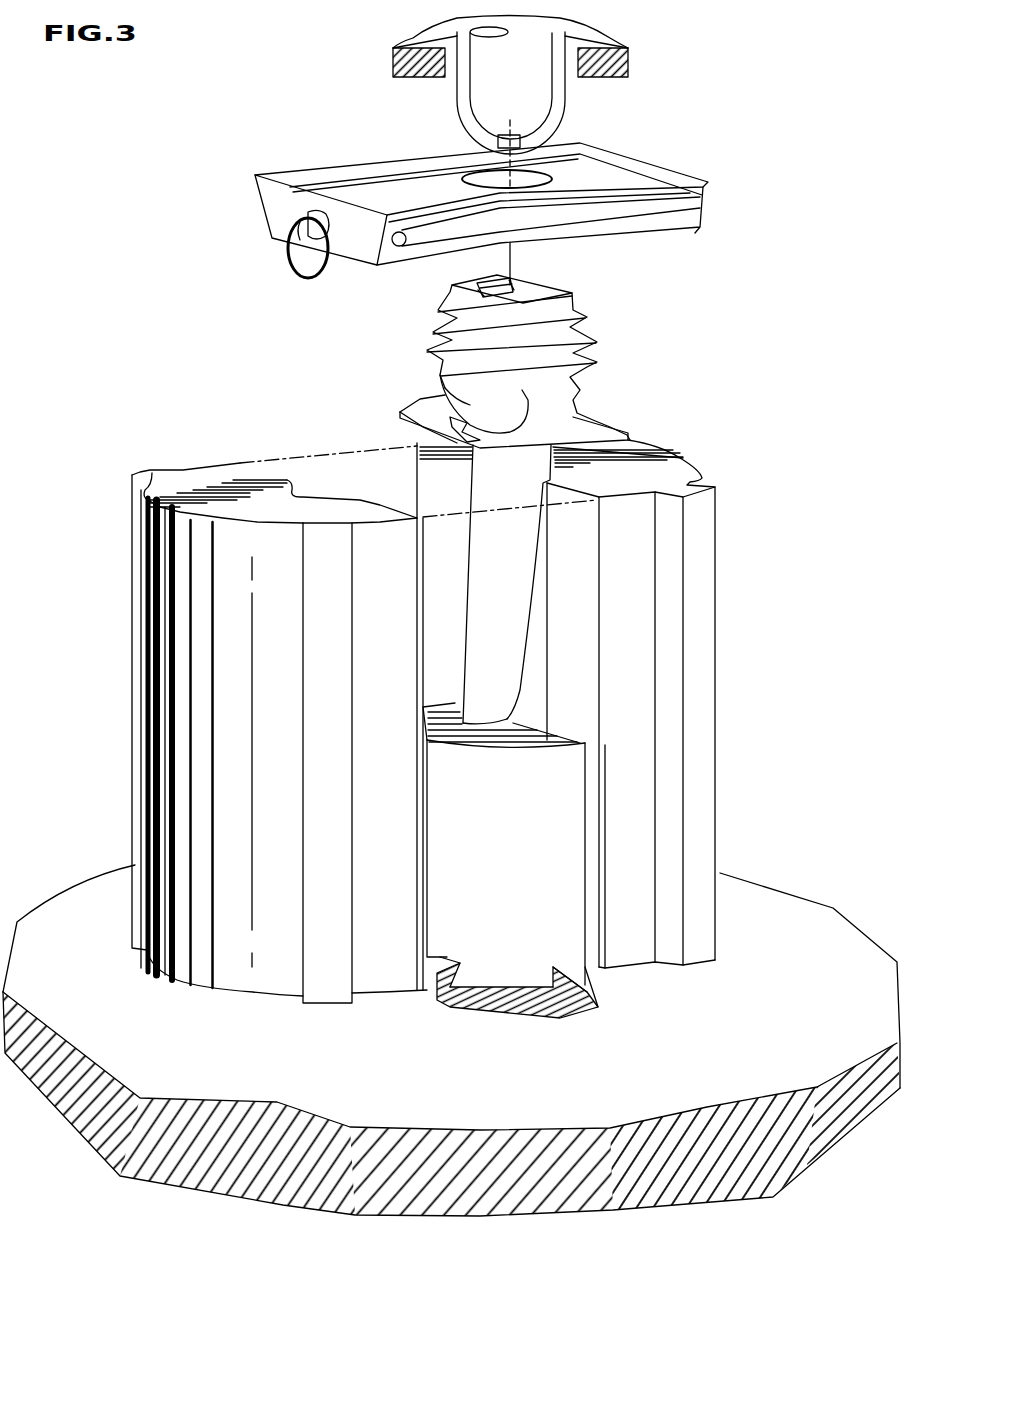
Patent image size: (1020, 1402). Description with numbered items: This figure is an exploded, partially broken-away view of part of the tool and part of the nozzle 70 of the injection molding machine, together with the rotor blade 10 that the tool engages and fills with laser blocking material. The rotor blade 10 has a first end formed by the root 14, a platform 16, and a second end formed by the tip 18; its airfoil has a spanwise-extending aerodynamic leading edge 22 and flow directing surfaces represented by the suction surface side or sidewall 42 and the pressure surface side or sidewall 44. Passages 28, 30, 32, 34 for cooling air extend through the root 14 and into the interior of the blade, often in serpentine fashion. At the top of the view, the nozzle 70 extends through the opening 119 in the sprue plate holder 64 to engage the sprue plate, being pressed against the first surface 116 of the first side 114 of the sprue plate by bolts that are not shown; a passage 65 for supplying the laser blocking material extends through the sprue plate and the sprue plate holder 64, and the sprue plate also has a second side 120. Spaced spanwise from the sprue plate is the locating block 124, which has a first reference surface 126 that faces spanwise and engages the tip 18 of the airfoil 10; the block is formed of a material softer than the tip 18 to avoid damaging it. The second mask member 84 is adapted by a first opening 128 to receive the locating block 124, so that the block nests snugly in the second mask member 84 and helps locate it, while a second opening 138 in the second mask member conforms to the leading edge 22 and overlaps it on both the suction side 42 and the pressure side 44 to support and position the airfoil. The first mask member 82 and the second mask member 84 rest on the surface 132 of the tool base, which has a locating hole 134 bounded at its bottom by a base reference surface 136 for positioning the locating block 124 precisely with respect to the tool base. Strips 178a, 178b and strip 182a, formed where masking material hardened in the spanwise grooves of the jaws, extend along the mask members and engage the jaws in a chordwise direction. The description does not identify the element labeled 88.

The rotor blade 10 is at (425, 368).
The root 14 is at (568, 332).
The platform 16 is at (603, 433).
The tip 18 is at (497, 722).
The aerodynamic leading edge 22 is at (470, 583).
The passage 28 is at (515, 292).
The passage 30 is at (540, 270).
The passage 32 is at (530, 276).
The passage 34 is at (515, 292).
The suction surface side 42 is at (517, 633).
The pressure surface side 44 is at (440, 720).
The sprue plate holder 64 is at (627, 63).
The passage 65 is at (480, 182).
The nozzle 70 is at (457, 44).
The first mask member 82 is at (403, 767).
The second mask member 84 is at (640, 713).
The slot wall face 88 is at (582, 563).
The first side 114 is at (323, 173).
The first surface 116 is at (612, 175).
The opening 119 is at (573, 63).
The second side 120 is at (357, 268).
The locating block 124 is at (508, 861).
The first reference surface 126 is at (513, 740).
The first opening 128 is at (583, 866).
The surface 132 is at (743, 900).
The locating hole 134 is at (553, 977).
The base reference surface 136 is at (498, 985).
The second opening 138 is at (534, 593).
The strip 178a is at (342, 521).
The strip 178b is at (150, 475).
The strip 182a is at (703, 517).